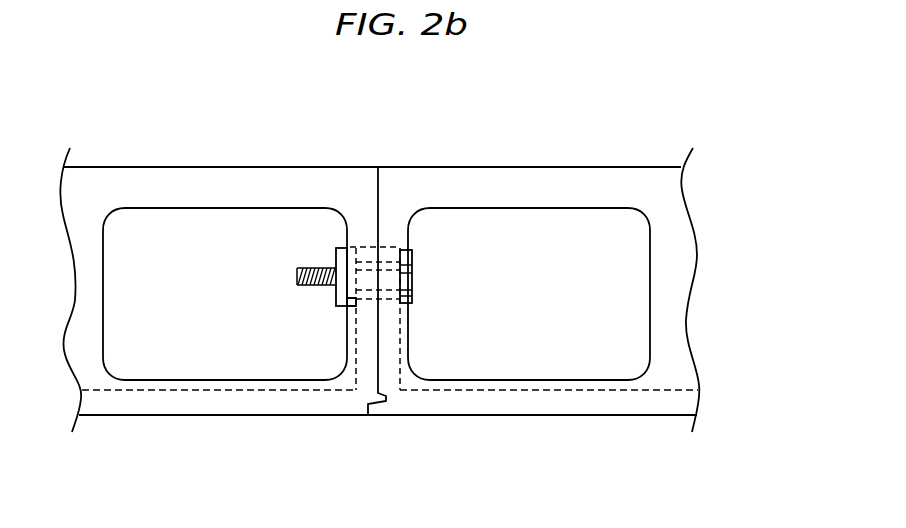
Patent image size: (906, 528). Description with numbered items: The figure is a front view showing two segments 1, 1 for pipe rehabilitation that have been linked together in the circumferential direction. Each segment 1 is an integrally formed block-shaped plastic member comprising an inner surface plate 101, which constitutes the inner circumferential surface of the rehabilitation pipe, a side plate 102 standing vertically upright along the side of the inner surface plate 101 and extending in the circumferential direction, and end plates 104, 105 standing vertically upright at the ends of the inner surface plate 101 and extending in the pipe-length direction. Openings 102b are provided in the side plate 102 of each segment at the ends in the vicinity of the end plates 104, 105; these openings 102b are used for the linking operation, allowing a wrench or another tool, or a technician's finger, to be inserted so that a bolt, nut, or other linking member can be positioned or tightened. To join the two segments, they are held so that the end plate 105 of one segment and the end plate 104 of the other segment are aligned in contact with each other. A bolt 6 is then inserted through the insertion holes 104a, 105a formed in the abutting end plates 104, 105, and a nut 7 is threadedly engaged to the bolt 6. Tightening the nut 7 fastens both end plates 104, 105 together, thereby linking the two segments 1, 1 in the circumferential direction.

The segment 1 is at (195, 152).
The bolt 6 is at (412, 262).
The nut 7 is at (336, 249).
The inner surface plate 101 is at (120, 405).
The side plate 102 is at (281, 167).
The opening 102b is at (189, 360).
The end plate 104 is at (394, 242).
The insertion hole 104a is at (393, 292).
The end plate 105 is at (367, 242).
The insertion hole 105a is at (368, 291).